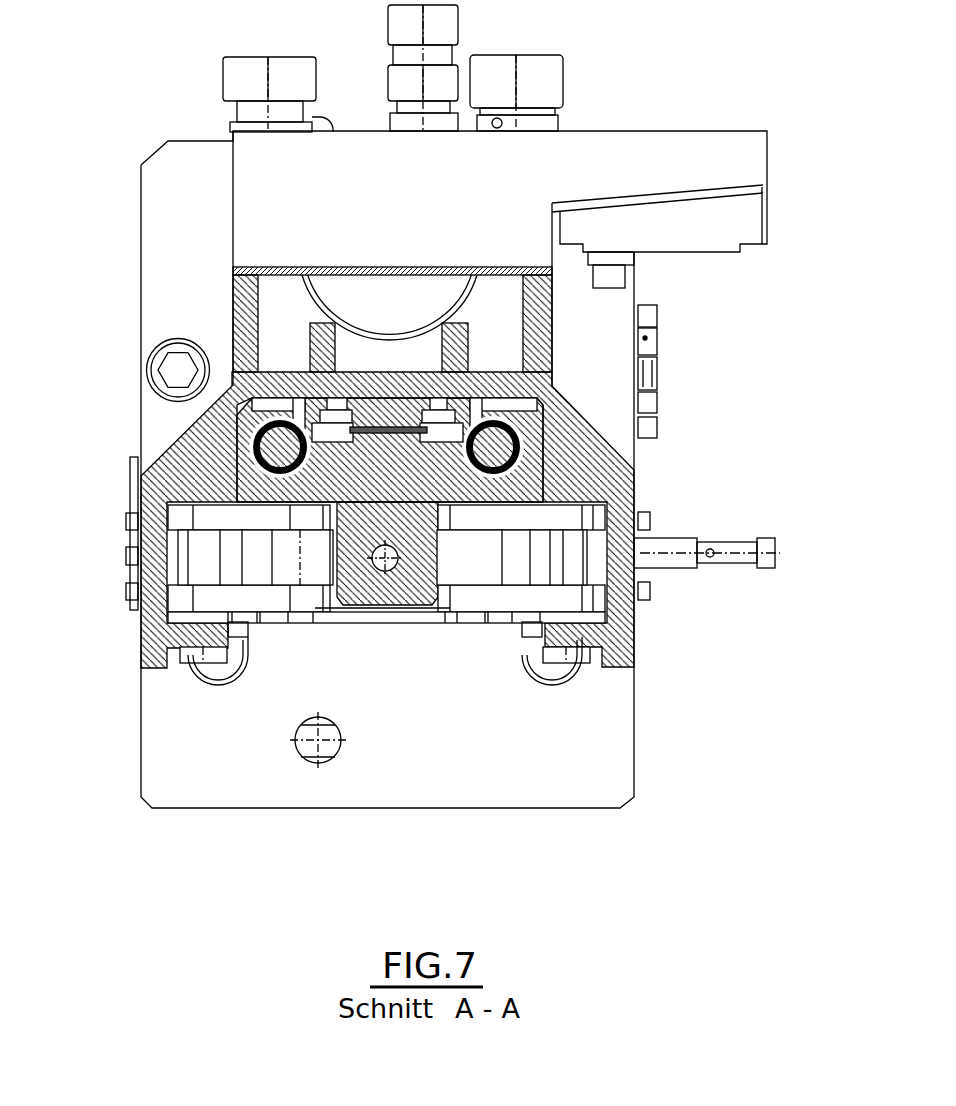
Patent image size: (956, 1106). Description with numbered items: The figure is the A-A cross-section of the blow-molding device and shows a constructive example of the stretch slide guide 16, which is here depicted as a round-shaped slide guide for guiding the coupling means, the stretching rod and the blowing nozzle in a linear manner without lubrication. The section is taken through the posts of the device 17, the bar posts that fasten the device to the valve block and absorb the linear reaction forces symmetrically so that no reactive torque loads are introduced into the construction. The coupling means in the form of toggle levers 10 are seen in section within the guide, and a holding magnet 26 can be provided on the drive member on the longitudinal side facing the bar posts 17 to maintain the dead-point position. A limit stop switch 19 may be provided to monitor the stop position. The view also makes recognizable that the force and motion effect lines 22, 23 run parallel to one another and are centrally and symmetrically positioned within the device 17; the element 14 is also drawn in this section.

The toggle lever 10 is at (222, 520).
The sleeve 14 is at (288, 560).
The stretch slide guide 16 is at (232, 357).
The posts of the device 17 is at (202, 457).
The limit stop switch 19 is at (770, 538).
The force and motion effect line 22 is at (392, 570).
The force and motion effect line 23 is at (385, 558).
The holding magnet 26 is at (423, 413).